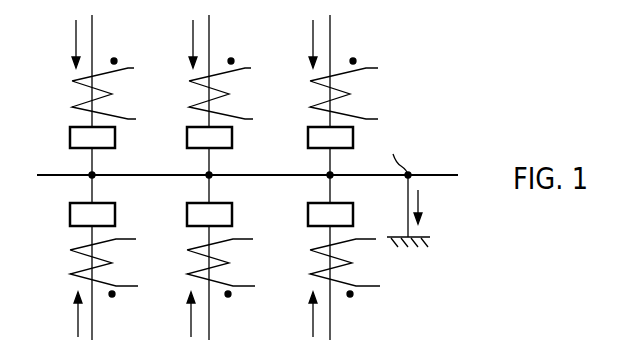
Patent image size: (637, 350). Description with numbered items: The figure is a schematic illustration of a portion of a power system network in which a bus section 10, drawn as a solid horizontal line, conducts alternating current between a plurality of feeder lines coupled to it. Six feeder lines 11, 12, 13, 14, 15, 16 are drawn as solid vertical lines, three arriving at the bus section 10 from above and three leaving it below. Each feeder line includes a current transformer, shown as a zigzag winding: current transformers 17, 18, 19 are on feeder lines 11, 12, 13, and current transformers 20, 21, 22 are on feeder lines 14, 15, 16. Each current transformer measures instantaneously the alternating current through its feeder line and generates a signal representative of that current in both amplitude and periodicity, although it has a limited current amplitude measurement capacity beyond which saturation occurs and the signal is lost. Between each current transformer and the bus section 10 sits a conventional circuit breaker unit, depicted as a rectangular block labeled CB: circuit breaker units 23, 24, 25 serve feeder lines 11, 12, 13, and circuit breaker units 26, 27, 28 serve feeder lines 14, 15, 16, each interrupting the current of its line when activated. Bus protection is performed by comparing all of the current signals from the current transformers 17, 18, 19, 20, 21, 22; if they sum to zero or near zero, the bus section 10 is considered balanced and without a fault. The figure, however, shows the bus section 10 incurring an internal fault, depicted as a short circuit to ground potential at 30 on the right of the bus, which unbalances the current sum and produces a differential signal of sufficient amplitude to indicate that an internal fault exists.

The bus section 10 is at (48, 174).
The feeder line 11 is at (330, 38).
The feeder line 12 is at (209, 42).
The feeder line 13 is at (92, 38).
The feeder line 14 is at (92, 318).
The feeder line 15 is at (209, 313).
The feeder line 16 is at (330, 313).
The current transformer 17 is at (316, 85).
The current transformer 18 is at (196, 85).
The current transformer 19 is at (78, 84).
The current transformer 20 is at (78, 272).
The current transformer 21 is at (200, 272).
The current transformer 22 is at (325, 275).
The circuit breaker unit 23 is at (308, 137).
The circuit breaker unit 24 is at (187, 136).
The circuit breaker unit 25 is at (70, 136).
The circuit breaker unit 26 is at (70, 211).
The circuit breaker unit 27 is at (187, 211).
The circuit breaker unit 28 is at (308, 211).
The short circuit to ground potential 30 is at (408, 205).